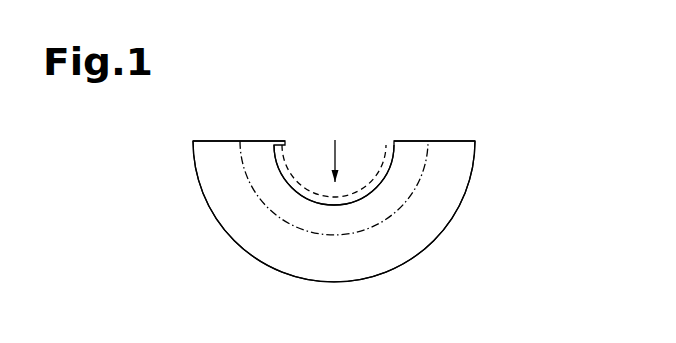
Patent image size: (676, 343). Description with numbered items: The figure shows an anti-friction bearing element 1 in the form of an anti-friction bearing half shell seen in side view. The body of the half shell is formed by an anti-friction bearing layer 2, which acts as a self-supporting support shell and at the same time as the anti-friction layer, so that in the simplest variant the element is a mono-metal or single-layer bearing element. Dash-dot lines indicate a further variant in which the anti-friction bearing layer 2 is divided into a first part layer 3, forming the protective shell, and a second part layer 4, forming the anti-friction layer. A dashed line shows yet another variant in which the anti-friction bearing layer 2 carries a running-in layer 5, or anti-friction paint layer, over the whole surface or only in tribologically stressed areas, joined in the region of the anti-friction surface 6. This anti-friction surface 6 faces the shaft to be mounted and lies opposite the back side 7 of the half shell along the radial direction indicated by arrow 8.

The anti-friction bearing element 1 is at (522, 130).
The anti-friction bearing layer 2 is at (453, 141).
The first part layer 3 is at (216, 141).
The second part layer 4 is at (257, 141).
The running-in layer 5 is at (311, 186).
The anti-friction surface 6 is at (280, 160).
The back side 7 is at (273, 268).
The arrow 8 is at (345, 145).